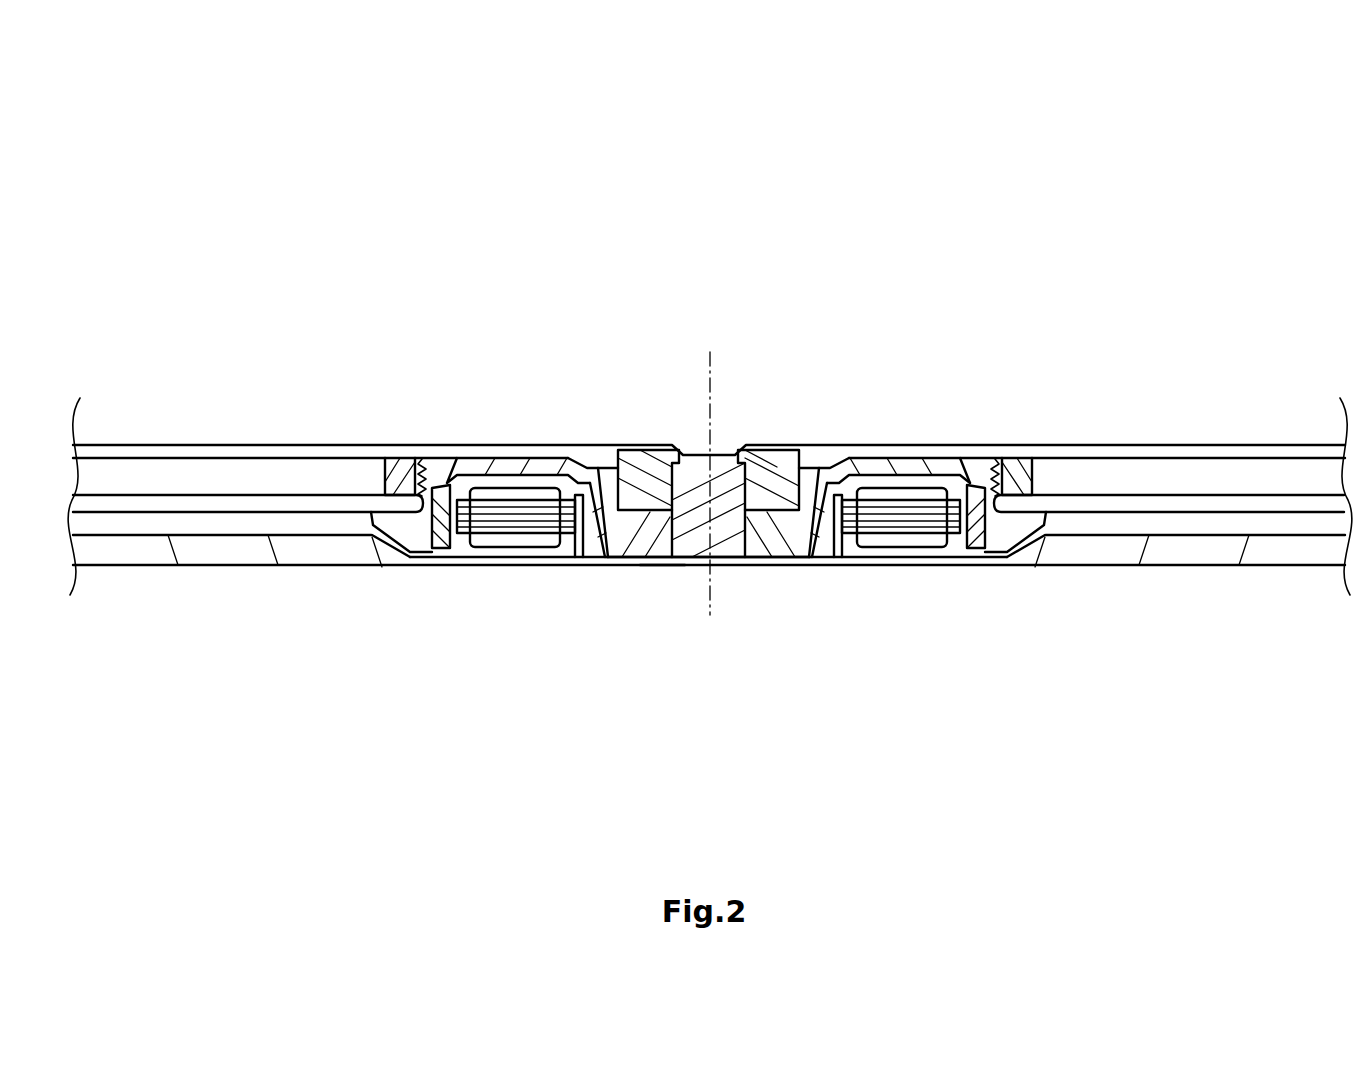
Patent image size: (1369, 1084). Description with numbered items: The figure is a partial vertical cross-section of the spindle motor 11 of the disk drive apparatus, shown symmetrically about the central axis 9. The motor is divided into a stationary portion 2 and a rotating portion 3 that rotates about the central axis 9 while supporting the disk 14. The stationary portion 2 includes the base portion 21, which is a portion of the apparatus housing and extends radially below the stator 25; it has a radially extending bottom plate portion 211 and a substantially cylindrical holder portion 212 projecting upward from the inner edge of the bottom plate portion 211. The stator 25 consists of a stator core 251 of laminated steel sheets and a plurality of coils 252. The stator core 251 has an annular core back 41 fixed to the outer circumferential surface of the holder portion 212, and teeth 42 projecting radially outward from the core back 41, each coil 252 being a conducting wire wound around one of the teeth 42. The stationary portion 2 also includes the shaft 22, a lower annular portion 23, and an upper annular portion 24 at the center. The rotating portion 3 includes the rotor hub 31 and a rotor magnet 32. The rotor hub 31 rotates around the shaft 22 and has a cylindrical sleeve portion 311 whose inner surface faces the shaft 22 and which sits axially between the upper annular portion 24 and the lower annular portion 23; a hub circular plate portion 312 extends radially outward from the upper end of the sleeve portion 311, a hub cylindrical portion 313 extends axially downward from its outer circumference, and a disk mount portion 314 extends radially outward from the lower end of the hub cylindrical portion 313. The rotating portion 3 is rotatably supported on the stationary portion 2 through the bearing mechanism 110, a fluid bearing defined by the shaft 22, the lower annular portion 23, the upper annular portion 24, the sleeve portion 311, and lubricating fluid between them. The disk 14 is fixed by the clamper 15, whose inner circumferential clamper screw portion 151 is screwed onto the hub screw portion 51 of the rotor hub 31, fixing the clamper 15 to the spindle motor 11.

The spindle motor 11 is at (1009, 288).
The central axis 9 is at (714, 388).
The stationary portion 2 is at (432, 566).
The disk 14 is at (1166, 503).
The bearing mechanism 110 is at (662, 566).
The rotor magnet 32 is at (400, 542).
The rotor hub 31 is at (617, 336).
The sleeve portion 311 is at (600, 515).
The hub circular plate portion 312 is at (545, 468).
The hub cylindrical portion 313 is at (412, 525).
The disk mount portion 314 is at (395, 522).
The rotating portion 3 is at (860, 457).
The clamper screw portion 151 is at (981, 472).
The core back 41 is at (850, 525).
The upper annular portion 24 is at (657, 455).
The shaft 22 is at (727, 530).
The lower annular portion 23 is at (789, 560).
The stator 25 is at (462, 674).
The stator core 251 is at (471, 548).
The coils 252 is at (530, 540).
The base portion 21 is at (963, 674).
The bottom plate portion 211 is at (915, 545).
The holder portion 212 is at (861, 556).
The teeth 42 is at (940, 522).
The hub screw portion 51 is at (1006, 469).
The clamper 15 is at (1022, 492).